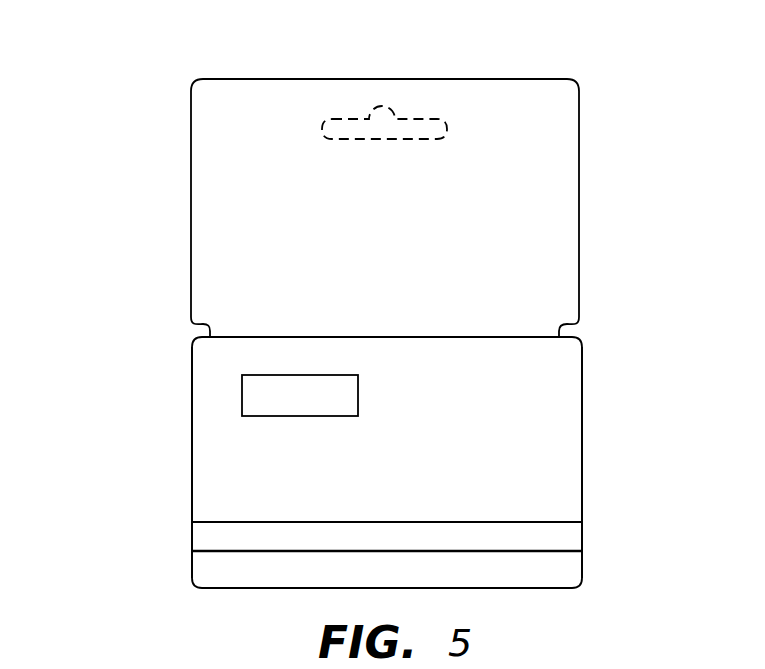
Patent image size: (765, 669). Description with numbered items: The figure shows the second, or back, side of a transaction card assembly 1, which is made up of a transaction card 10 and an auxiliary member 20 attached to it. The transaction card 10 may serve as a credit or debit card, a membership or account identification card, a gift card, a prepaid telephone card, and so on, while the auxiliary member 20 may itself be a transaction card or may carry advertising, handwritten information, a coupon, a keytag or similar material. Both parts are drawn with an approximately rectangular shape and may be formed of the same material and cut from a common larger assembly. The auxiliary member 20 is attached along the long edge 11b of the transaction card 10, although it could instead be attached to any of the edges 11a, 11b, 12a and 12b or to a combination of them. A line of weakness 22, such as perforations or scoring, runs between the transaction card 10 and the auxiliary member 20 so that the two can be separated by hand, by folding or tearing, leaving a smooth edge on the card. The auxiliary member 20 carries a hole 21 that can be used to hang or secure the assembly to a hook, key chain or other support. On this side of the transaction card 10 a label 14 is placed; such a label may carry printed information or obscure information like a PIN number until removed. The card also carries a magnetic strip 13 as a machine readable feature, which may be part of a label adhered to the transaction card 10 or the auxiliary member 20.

The transaction card assembly 1 is at (127, 56).
The transaction card 10 is at (583, 416).
The edge 11a is at (488, 590).
The long edge 11b is at (210, 333).
The edge 12a is at (192, 468).
The edge 12b is at (583, 478).
The magnetic strip 13 is at (216, 540).
The label 14 is at (242, 404).
The auxiliary member 20 is at (582, 113).
The hole 21 is at (383, 106).
The line of weakness 22 is at (535, 336).